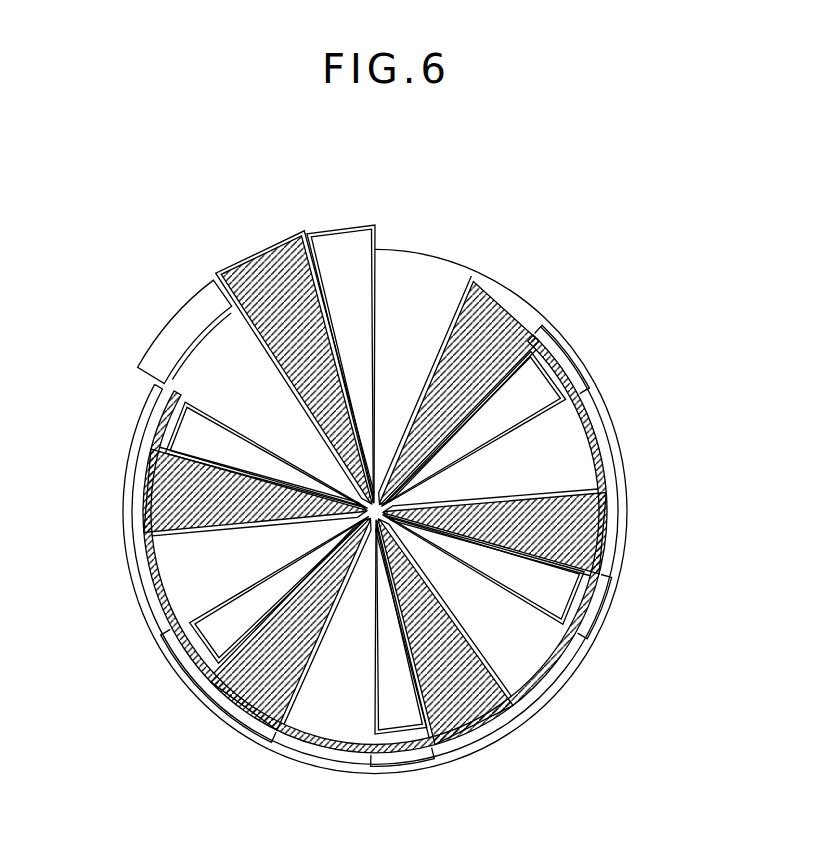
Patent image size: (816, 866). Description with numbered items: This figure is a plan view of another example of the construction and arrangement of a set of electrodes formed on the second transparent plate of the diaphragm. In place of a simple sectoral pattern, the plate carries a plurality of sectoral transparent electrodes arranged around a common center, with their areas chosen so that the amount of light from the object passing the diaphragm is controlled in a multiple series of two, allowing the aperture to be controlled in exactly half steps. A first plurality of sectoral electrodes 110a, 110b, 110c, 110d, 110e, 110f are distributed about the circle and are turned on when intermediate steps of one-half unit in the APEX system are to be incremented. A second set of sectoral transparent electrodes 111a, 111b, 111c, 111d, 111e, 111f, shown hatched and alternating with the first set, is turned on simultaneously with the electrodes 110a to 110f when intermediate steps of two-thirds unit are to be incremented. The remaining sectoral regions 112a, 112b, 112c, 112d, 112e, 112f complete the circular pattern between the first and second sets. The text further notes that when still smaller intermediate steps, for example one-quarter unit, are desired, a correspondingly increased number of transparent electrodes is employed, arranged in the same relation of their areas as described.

The sectoral transparent electrode 110a is at (348, 232).
The sectoral transparent electrode 110b is at (187, 435).
The sectoral transparent electrode 110c is at (218, 637).
The sectoral transparent electrode 110d is at (408, 717).
The sectoral transparent electrode 110e is at (557, 603).
The sectoral transparent electrode 110f is at (540, 390).
The sectoral transparent electrode 111a is at (251, 262).
The sectoral transparent electrode 111b is at (153, 493).
The sectoral transparent electrode 111c is at (263, 690).
The sectoral transparent electrode 111d is at (467, 710).
The sectoral transparent electrode 111e is at (593, 543).
The sectoral transparent electrode 111f is at (513, 322).
The third sector segment 112a is at (170, 342).
The third sector segment 112b is at (180, 577).
The third sector segment 112c is at (338, 717).
The third sector segment 112d is at (523, 665).
The third sector segment 112e is at (572, 468).
The third sector segment 112f is at (423, 277).